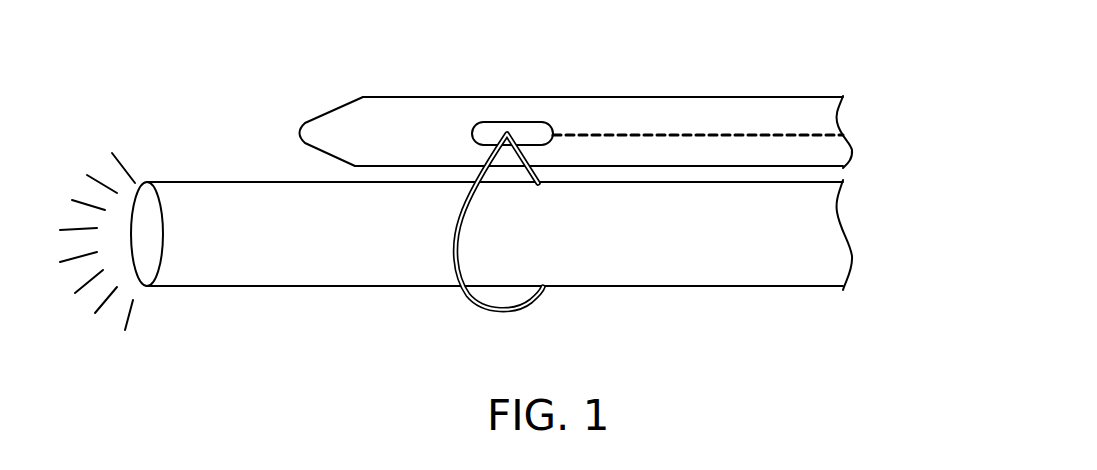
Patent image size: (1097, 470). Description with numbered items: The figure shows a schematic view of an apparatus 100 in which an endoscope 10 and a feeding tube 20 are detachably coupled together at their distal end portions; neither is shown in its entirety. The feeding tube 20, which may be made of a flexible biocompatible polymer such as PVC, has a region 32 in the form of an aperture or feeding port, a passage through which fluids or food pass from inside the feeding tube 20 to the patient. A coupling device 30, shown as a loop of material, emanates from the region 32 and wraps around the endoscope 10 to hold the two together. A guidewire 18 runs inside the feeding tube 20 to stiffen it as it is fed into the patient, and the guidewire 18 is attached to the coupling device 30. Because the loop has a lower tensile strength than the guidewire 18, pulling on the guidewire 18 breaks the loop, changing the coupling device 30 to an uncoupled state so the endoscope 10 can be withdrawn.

The apparatus 100 is at (402, 385).
The endoscope 10 is at (320, 272).
The feeding tube 20 is at (663, 113).
The region 32 is at (513, 122).
The guidewire 18 is at (760, 134).
The coupling device 30 is at (543, 187).